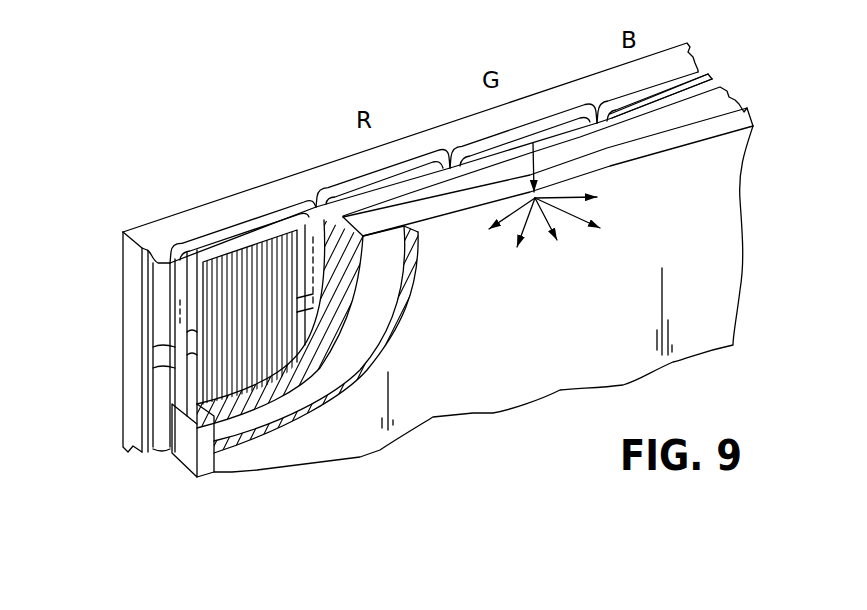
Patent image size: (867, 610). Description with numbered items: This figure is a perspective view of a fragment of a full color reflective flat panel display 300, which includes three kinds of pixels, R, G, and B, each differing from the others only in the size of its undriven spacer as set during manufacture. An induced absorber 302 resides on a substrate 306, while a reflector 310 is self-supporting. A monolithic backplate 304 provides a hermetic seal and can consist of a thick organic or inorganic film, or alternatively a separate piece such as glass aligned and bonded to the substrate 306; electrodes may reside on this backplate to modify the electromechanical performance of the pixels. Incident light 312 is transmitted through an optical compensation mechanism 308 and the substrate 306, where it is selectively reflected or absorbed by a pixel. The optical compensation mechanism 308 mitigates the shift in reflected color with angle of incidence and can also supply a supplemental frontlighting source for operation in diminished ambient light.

The full color reflective flat panel display 300 is at (443, 465).
The induced absorber 302 is at (233, 274).
The monolithic backplate 304 is at (126, 284).
The substrate 306 is at (182, 458).
The optical compensation mechanism 308 is at (215, 452).
The reflector 310 is at (715, 71).
The incident light 312 is at (541, 151).